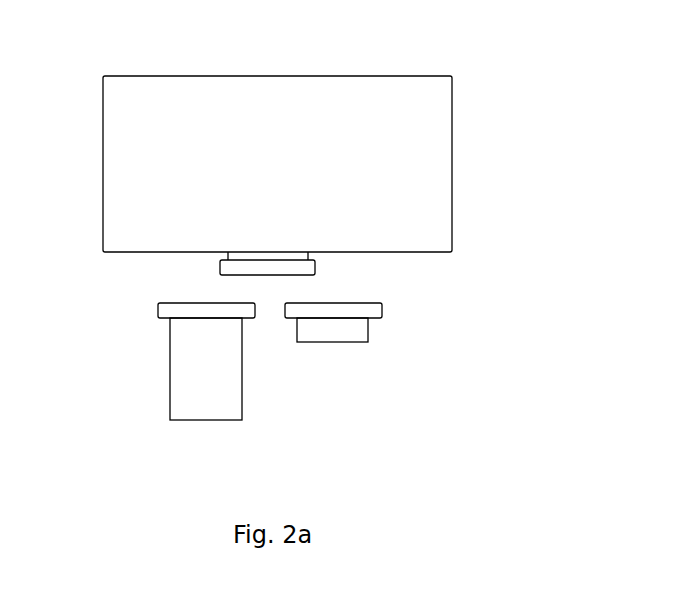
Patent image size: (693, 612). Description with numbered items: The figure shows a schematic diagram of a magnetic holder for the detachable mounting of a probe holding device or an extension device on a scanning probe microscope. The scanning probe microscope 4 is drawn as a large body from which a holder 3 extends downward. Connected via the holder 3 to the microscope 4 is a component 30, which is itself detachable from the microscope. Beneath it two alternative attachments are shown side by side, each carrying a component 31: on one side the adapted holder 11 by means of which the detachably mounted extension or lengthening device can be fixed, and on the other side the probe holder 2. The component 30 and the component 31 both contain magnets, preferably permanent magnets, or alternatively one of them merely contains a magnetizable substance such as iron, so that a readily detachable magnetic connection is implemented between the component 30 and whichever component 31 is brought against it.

The scanning probe microscope 4 is at (435, 101).
The holder 3 is at (293, 250).
The component 30 is at (310, 267).
The component 31 is at (175, 312).
The adapted holder 11 is at (183, 352).
The probe holder 2 is at (360, 333).